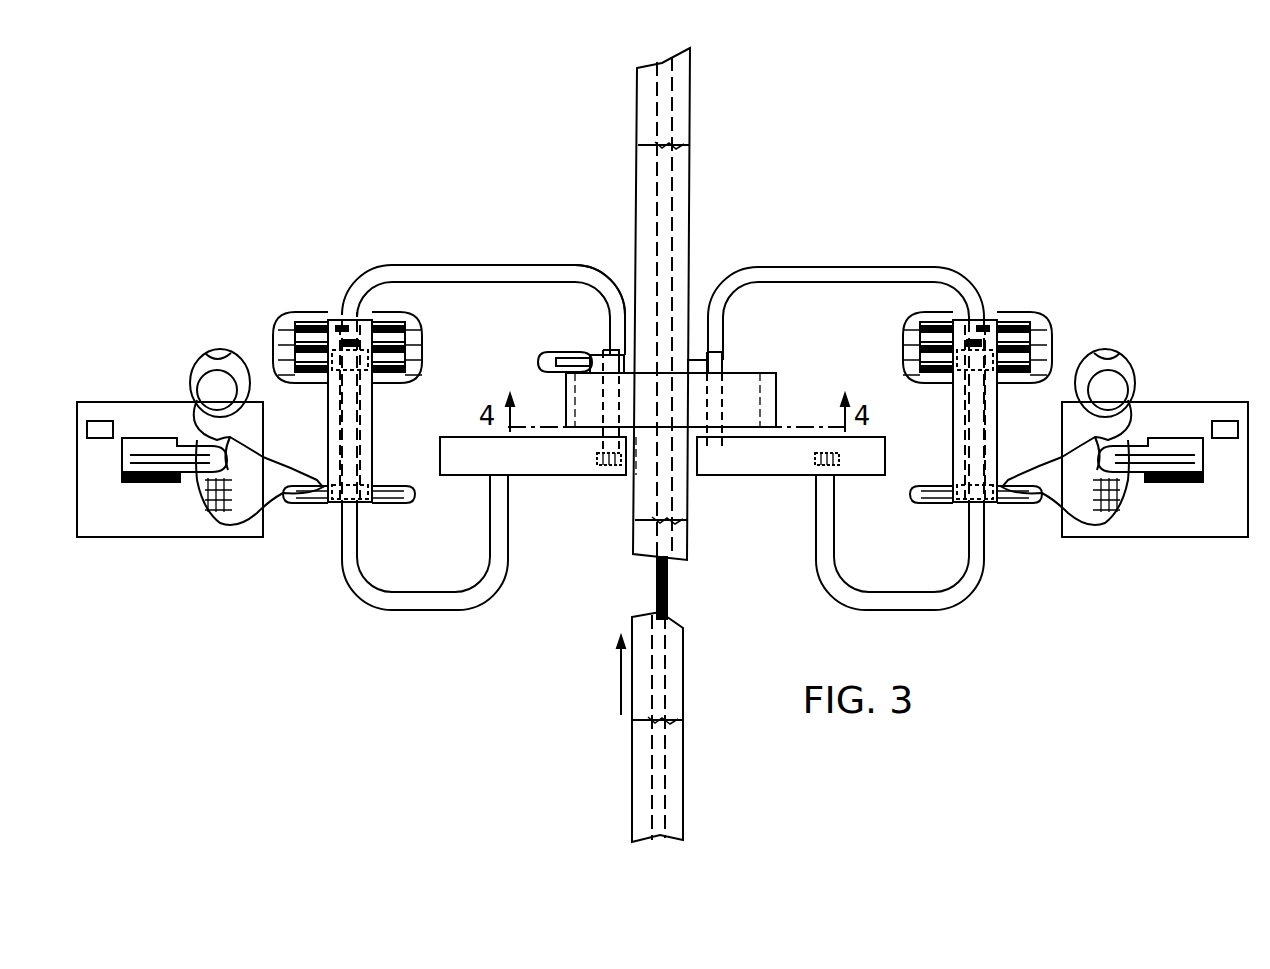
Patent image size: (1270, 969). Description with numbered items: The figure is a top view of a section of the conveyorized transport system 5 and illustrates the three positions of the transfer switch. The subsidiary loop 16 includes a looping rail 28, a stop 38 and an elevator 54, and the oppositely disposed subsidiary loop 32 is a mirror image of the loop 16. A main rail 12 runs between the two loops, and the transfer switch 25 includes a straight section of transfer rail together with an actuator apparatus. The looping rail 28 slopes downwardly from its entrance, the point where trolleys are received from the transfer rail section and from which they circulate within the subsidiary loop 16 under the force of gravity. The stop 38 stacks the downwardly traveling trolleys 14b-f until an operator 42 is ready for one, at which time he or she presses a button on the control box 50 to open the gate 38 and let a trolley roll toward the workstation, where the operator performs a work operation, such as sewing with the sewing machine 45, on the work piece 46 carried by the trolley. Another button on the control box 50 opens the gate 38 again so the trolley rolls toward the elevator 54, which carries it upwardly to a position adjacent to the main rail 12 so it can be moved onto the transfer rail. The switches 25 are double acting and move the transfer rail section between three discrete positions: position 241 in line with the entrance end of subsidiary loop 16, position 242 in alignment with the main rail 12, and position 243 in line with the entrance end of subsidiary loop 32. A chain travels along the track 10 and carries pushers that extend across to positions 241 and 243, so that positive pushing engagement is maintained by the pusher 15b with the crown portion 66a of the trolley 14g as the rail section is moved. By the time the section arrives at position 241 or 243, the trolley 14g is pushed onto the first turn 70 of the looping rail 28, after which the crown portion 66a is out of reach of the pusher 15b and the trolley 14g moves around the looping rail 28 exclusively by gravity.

The transport system 5 is at (571, 654).
The track 10 is at (678, 656).
The main rail 12 is at (668, 582).
The trolleys 14b-f is at (420, 337).
The trolley 14g is at (546, 357).
The pusher 15b is at (716, 355).
The subsidiary loop 16 is at (483, 409).
The first position of rail section 241 is at (580, 403).
The second position of rail section 242 is at (635, 458).
The third position of rail section 243 is at (730, 410).
The transfer switch 25 is at (755, 380).
The looping rail 28 is at (524, 266).
The subsidiary loop 32 is at (862, 268).
The stop 38 is at (372, 413).
The operator 42 is at (196, 368).
The sewing machine 45 is at (172, 482).
The work piece 46 is at (256, 492).
The control box 50 is at (102, 422).
The elevator 54 is at (553, 470).
The crown portion 66a is at (606, 352).
The first turn 70 is at (590, 285).